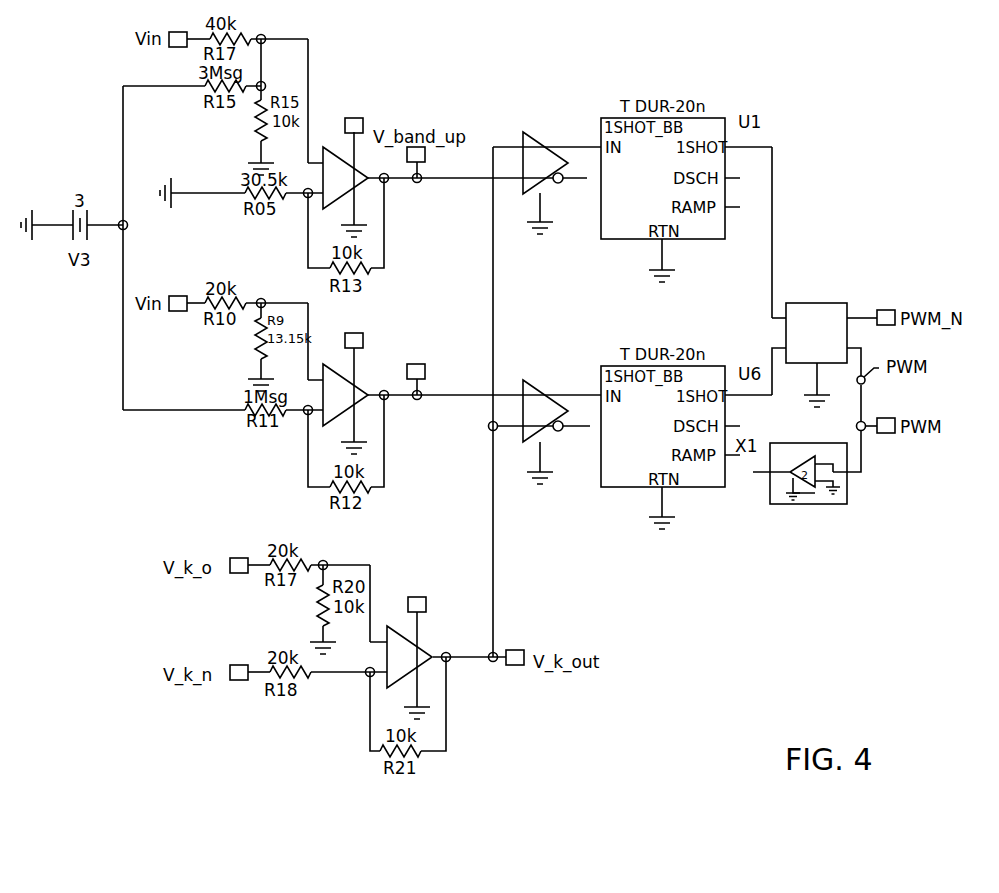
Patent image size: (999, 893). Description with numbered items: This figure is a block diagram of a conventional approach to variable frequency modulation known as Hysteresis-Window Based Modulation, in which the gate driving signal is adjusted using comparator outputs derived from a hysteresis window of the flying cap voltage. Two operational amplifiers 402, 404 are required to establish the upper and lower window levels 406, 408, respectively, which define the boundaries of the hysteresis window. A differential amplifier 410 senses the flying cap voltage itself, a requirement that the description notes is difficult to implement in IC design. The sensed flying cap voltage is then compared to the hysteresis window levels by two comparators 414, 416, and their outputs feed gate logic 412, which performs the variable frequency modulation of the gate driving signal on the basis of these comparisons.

The operational amplifier 402 is at (362, 181).
The operational amplifier 404 is at (385, 400).
The upper window level 406 is at (359, 99).
The lower window level 408 is at (420, 342).
The differential amplifier 410 is at (380, 658).
The gate logic 412 is at (828, 265).
The comparator 414 is at (548, 147).
The comparator 416 is at (546, 394).